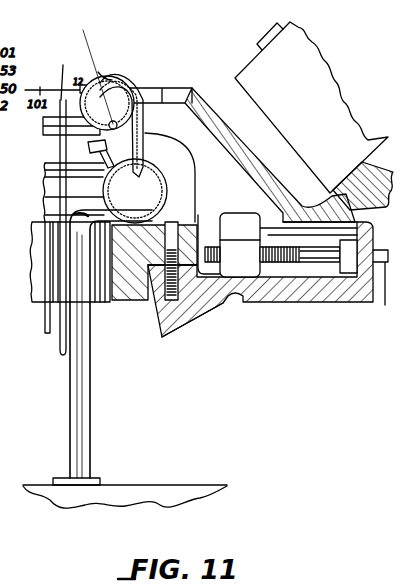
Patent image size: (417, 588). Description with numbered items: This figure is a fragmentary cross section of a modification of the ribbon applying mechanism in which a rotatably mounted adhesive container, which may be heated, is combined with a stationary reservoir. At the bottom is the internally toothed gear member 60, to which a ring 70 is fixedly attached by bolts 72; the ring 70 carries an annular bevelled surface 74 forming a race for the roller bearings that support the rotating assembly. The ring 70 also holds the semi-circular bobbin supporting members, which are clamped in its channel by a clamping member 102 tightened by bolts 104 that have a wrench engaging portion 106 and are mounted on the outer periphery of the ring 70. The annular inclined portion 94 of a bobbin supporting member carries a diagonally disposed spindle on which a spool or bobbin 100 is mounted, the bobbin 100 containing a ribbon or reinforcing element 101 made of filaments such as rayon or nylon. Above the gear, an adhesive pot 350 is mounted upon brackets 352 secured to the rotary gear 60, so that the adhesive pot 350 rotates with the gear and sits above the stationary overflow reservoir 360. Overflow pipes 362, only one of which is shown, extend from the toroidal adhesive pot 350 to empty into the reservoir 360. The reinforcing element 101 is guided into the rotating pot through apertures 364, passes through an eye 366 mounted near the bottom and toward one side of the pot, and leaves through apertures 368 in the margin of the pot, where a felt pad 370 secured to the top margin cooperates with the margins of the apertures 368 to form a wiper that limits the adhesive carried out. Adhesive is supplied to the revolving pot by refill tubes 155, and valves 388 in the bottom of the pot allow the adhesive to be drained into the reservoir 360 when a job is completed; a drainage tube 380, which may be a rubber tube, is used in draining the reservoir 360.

The spool or bobbin 100 is at (323, 35).
The annular inclined portion 94 is at (367, 195).
The brackets 352 is at (195, 173).
The internally toothed gear member 60 is at (127, 290).
The ring 70 is at (181, 331).
The annular bevelled surface 74 is at (213, 317).
The bolts 72 is at (199, 216).
The clamping member 102 is at (242, 272).
The bolts 104 is at (307, 268).
The wrench engaging portion 106 is at (385, 264).
The stationary overflow reservoir 360 is at (53, 190).
The apertures 368 is at (70, 118).
The apertures 364 is at (103, 82).
The felt pad 370 is at (99, 72).
The overflow pipes 362 is at (131, 116).
The eyes 366 is at (120, 127).
The reinforcing element 101 is at (83, 30).
The valves 388 is at (100, 145).
The refill tubes 155 is at (62, 353).
The adhesive pot 350 is at (58, 76).
The drainage tube 380 is at (46, 326).